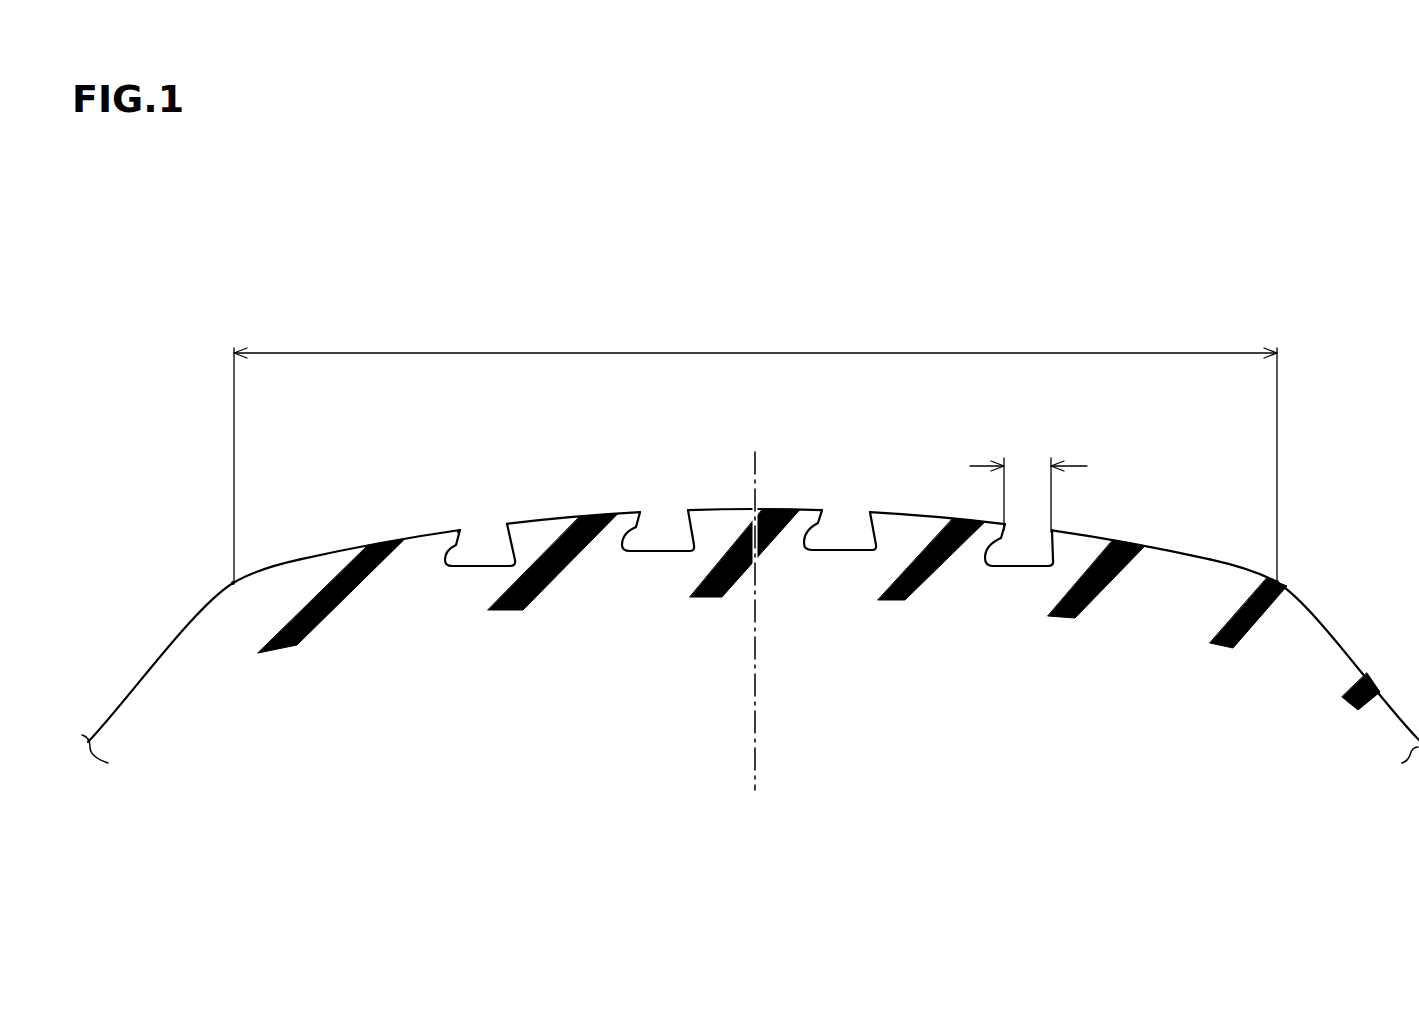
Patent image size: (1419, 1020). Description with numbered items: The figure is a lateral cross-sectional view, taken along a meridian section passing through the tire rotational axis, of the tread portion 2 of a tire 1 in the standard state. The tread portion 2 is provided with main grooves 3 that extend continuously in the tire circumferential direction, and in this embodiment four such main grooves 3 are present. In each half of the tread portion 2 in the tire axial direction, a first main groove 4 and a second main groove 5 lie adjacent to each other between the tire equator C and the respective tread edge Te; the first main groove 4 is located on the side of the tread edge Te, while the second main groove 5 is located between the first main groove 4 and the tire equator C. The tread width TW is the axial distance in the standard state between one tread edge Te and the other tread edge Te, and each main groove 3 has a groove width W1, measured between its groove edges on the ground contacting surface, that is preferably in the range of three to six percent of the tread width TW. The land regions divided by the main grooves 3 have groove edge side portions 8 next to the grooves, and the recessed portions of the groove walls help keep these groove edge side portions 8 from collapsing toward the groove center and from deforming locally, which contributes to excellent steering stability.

The tire 1 is at (1097, 533).
The tread portion 2 is at (443, 522).
The main groove 3 is at (472, 443).
The first main groove 4 is at (480, 538).
The second main groove 5 is at (663, 530).
The groove edge side portion 8 is at (450, 540).
The tire equator C is at (755, 605).
The tread width TW is at (755, 451).
The tread edge Te is at (233, 585).
The groove width W1 is at (1028, 482).